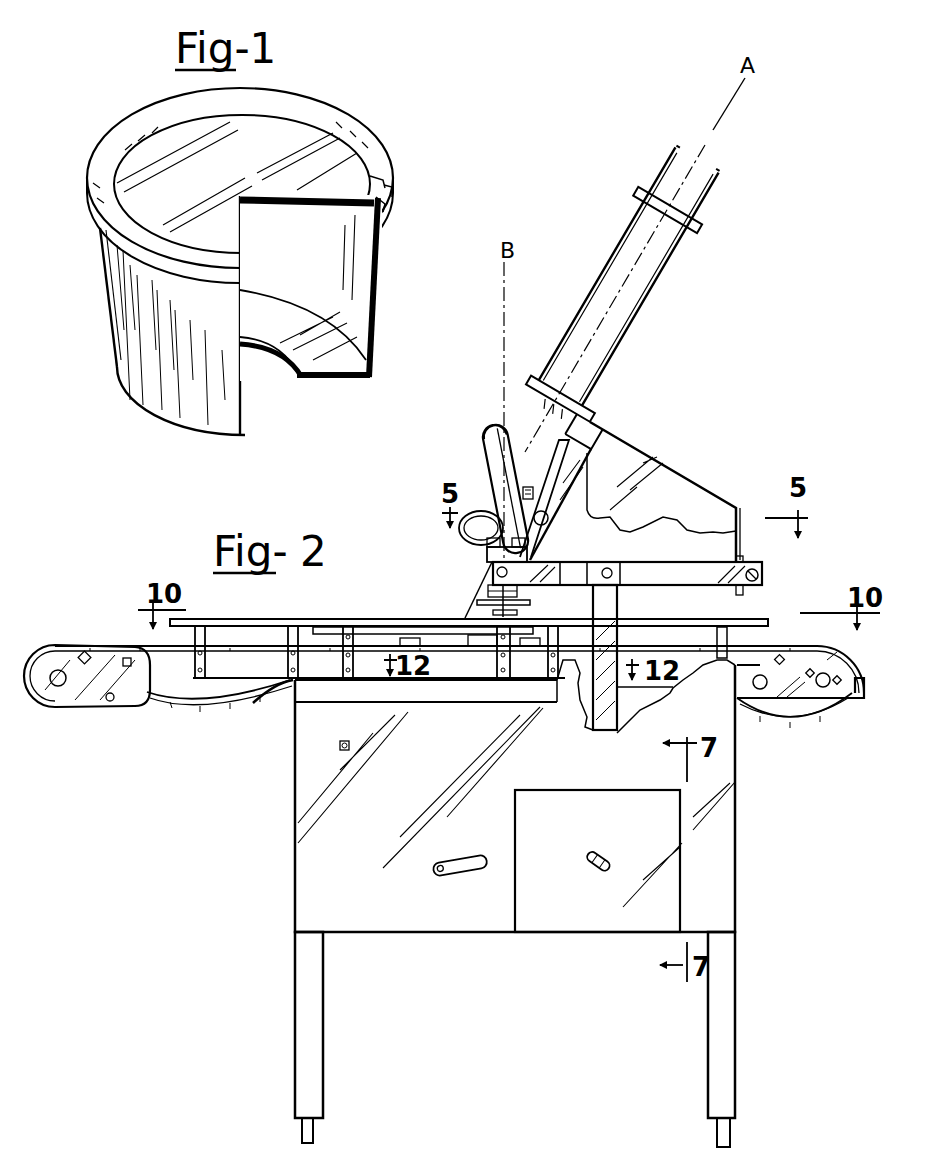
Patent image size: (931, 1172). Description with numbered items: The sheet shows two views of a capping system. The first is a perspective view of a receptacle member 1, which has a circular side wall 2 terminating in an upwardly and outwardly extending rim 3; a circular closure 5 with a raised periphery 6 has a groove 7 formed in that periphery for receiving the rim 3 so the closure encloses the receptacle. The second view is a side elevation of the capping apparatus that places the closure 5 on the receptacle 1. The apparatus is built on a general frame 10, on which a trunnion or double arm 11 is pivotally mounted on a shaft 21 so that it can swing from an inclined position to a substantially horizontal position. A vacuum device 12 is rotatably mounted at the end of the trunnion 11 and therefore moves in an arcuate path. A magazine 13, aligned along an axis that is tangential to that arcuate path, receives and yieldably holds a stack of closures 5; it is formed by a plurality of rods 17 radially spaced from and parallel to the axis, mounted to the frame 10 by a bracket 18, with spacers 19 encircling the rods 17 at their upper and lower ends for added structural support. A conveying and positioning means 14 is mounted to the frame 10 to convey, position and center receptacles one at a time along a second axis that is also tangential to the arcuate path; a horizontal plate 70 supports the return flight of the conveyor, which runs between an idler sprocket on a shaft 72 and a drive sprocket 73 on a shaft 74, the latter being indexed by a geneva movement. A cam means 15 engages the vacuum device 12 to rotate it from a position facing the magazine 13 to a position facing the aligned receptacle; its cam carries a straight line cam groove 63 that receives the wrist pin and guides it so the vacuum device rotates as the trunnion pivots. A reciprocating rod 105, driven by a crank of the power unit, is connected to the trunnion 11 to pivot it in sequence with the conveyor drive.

In FIG. 1, the receptacle member 1 is at (296, 380).
In FIG. 1, the circular side wall 2 is at (379, 292).
In FIG. 1, the rim 3 is at (385, 207).
In FIG. 1, the circular closure 5 is at (333, 120).
In FIG. 1, the raised periphery 6 is at (380, 170).
In FIG. 1, the groove 7 is at (392, 194).
In FIG. 2, the general frame 10 is at (385, 937).
In FIG. 2, the trunnion or arm 11 is at (670, 571).
In FIG. 2, the vacuum device 12 is at (484, 568).
In FIG. 2, the magazine 13 is at (556, 360).
In FIG. 2, the conveying and positioning means 14 is at (89, 642).
In FIG. 2, the cam means 15 is at (478, 470).
In FIG. 2, the rods 17 is at (717, 172).
In FIG. 2, the bracket 18 is at (592, 421).
In FIG. 2, the spacers 19 is at (716, 216).
In FIG. 2, the shaft 21 is at (759, 576).
In FIG. 2, the straight line cam groove 63 is at (485, 422).
In FIG. 2, the horizontal plate 70 is at (285, 700).
In FIG. 2, the shaft 72 is at (64, 684).
In FIG. 2, the drive sprocket 73 is at (820, 714).
In FIG. 2, the shaft 74 is at (825, 681).
In FIG. 2, the rod 105 is at (622, 606).